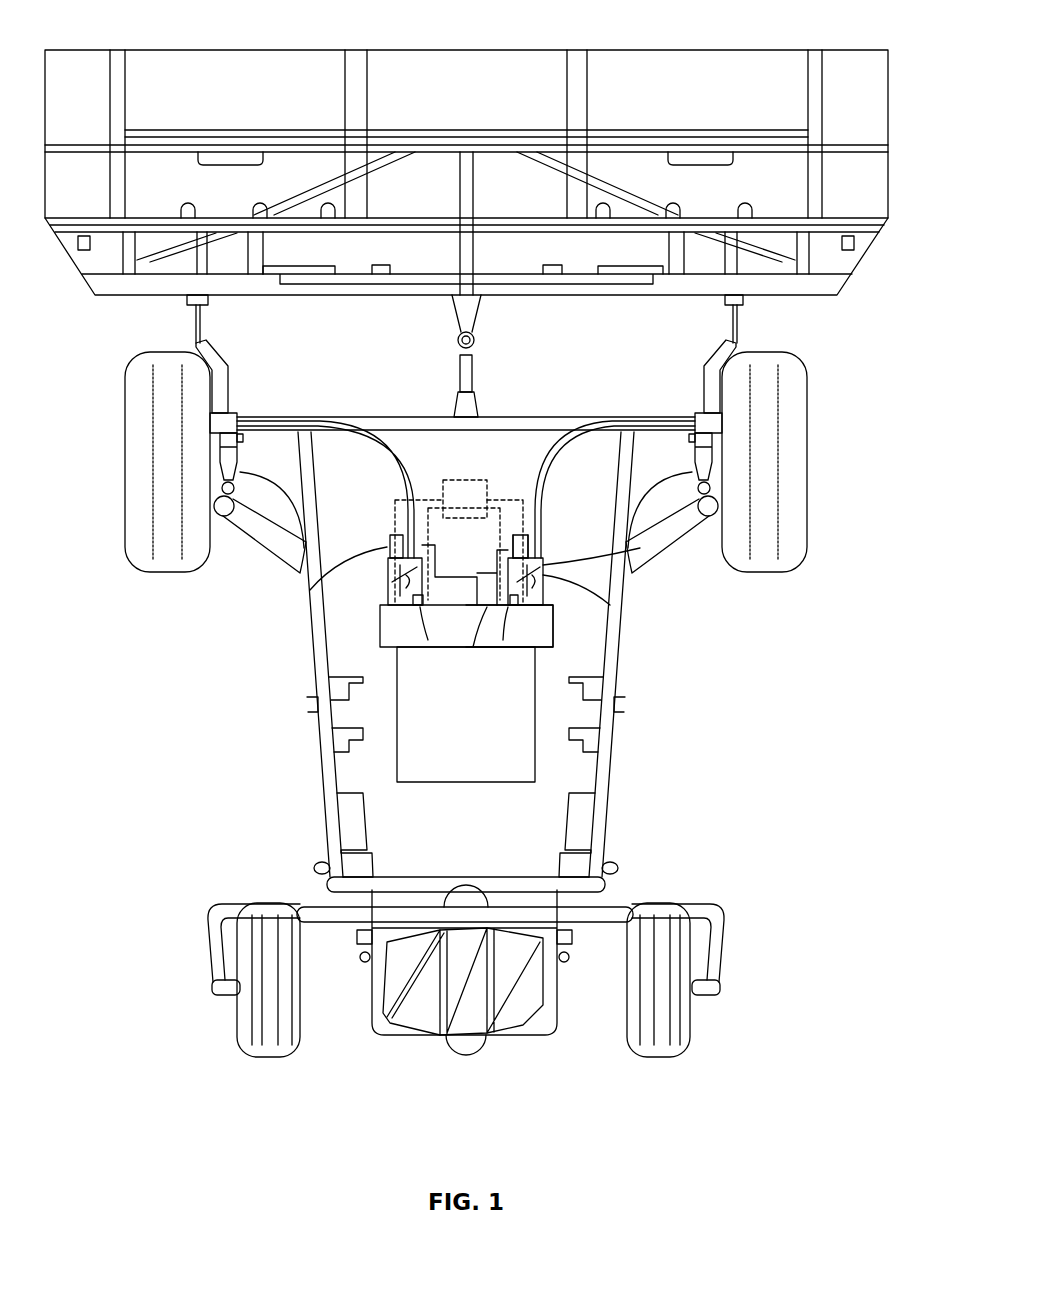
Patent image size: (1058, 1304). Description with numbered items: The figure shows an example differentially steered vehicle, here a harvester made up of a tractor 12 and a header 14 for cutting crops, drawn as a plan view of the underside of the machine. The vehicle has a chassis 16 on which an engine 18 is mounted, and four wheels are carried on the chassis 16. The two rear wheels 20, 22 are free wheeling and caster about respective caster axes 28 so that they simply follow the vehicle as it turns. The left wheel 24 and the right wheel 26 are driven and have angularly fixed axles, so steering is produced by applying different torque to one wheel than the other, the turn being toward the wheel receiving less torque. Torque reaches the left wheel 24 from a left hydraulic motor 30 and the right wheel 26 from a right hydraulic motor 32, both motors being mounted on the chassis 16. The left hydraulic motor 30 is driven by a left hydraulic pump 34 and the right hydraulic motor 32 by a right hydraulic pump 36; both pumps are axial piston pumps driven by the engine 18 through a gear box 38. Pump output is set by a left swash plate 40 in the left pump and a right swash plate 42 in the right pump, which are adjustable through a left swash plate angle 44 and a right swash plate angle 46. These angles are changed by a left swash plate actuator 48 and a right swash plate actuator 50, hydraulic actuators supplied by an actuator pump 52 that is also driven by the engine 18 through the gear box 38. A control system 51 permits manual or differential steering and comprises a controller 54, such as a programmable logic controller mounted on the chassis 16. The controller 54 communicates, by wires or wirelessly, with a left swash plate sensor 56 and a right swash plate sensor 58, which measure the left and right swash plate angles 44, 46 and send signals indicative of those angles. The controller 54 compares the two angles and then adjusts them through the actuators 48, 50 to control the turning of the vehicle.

The tractor 12 is at (300, 758).
The header 14 is at (890, 138).
The chassis 16 is at (612, 770).
The engine 18 is at (487, 771).
The wheel 20 is at (270, 1050).
The wheel 22 is at (658, 1050).
The left wheel 24 is at (163, 563).
The right wheel 26 is at (768, 563).
The caster axes 28 is at (318, 903).
The left hydraulic motor 30 is at (235, 412).
The right hydraulic motor 32 is at (700, 412).
The left hydraulic pump 34 is at (381, 614).
The right hydraulic pump 36 is at (545, 573).
The gear box 38 is at (540, 632).
The left swash plate 40 is at (380, 575).
The right swash plate 42 is at (650, 548).
The left swash plate angle 44 is at (412, 577).
The right swash plate angle 46 is at (610, 605).
The left swash plate actuator 48 is at (310, 590).
The right swash plate actuator 50 is at (512, 552).
The control system 51 is at (500, 492).
The actuator pump 52 is at (473, 647).
The controller 54 is at (465, 499).
The left swash plate sensor 56 is at (428, 640).
The right swash plate sensor 58 is at (503, 640).